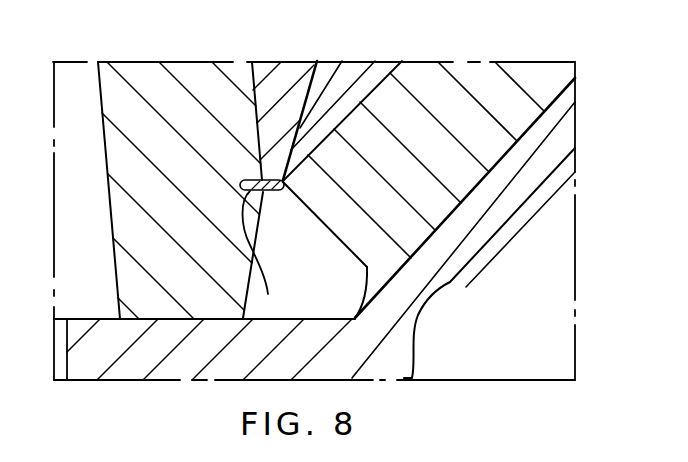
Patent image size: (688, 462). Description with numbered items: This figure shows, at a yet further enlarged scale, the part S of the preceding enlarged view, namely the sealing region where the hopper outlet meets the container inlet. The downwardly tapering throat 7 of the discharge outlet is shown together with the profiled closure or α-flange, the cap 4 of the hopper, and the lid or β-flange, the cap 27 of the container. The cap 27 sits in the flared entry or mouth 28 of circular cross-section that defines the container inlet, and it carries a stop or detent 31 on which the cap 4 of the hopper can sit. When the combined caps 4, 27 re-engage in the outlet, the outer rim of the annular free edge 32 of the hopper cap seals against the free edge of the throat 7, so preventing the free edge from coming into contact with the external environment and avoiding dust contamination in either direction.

The cap 27 is at (133, 163).
The cap 4 is at (283, 86).
The throat 7 is at (356, 78).
The annular free edge 32 is at (283, 192).
The stop or detent 31 is at (272, 253).
The flared entry or mouth 28 is at (440, 276).
The part S is at (150, 381).